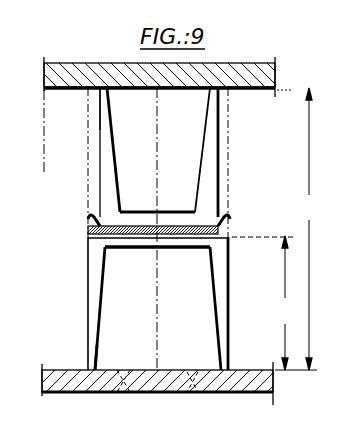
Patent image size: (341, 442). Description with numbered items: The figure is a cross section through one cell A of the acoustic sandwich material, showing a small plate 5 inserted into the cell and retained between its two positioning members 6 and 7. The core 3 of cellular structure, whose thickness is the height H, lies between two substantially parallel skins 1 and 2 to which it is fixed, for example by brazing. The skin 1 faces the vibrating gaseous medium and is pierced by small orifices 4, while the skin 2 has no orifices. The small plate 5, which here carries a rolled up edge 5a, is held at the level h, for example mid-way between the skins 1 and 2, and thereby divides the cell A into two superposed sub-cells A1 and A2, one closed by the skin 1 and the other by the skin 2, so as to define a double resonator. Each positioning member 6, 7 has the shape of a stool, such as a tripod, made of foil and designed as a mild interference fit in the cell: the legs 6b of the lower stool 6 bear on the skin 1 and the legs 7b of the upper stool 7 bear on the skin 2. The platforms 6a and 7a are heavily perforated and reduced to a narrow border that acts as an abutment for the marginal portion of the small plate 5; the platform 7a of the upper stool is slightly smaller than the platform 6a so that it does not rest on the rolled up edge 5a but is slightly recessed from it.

The skin 1 is at (95, 380).
The skin 2 is at (58, 72).
The core of cellular structure 3 is at (230, 191).
The small orifices 4 is at (123, 394).
The small plate 5 is at (179, 226).
The rolled up edge 5a is at (228, 222).
The positioning member 6 is at (130, 304).
The platform 6a is at (132, 238).
The legs 6b is at (91, 343).
The positioning member 7 is at (123, 155).
The platform 7a is at (132, 222).
The legs 7b is at (104, 113).
The cell A is at (129, 316).
The sub-cell A1 is at (187, 310).
The sub-cell A2 is at (190, 145).
The thickness (height) of core H is at (298, 229).
The level of small plate h is at (264, 303).